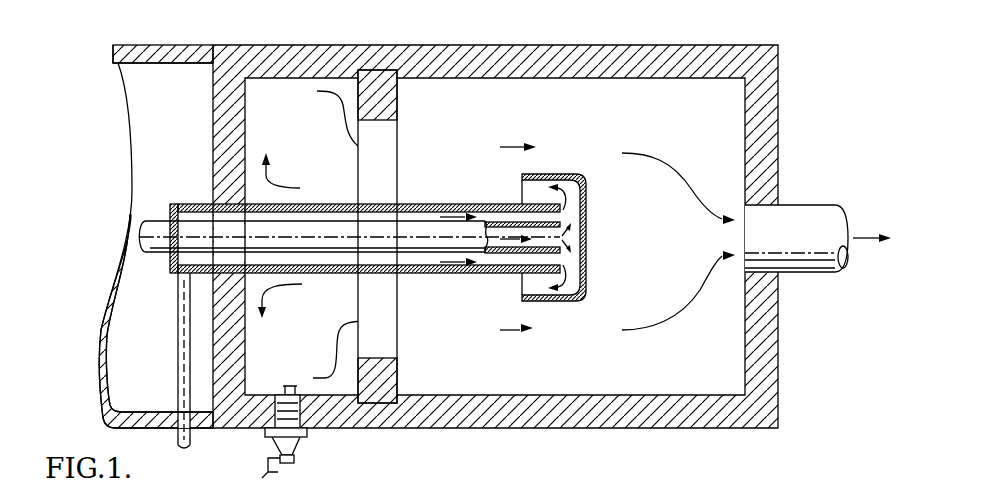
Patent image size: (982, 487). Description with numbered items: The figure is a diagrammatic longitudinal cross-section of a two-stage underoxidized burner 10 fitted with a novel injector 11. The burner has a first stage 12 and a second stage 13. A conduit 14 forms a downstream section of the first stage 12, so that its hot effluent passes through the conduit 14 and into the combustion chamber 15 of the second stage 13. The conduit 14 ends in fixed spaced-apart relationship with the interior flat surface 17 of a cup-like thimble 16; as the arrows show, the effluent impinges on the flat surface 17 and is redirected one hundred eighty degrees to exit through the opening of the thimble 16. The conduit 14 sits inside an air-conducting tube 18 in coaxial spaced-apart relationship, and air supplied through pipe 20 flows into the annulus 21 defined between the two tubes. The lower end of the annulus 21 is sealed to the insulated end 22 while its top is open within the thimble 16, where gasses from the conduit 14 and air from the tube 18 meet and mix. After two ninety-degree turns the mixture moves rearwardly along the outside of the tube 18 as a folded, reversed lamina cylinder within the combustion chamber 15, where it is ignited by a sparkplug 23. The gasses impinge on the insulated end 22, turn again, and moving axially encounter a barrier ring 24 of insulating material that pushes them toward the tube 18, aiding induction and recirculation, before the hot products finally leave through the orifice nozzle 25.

The two-stage underoxidized burner 10 is at (828, 75).
The injector 11 is at (509, 331).
The first stage 12 is at (150, 112).
The second stage 13 is at (470, 46).
The conduit 14 is at (152, 216).
The combustion chamber 15 is at (309, 137).
The thimble 16 is at (556, 302).
The flat surface 17 is at (585, 292).
The air-conducting tube 18 is at (421, 196).
The pipe 20 is at (192, 445).
The annulus 21 is at (337, 200).
The insulated end 22 is at (240, 344).
The sparkplug 23 is at (300, 448).
The barrier ring 24 is at (398, 398).
The orifice nozzle 25 is at (810, 205).